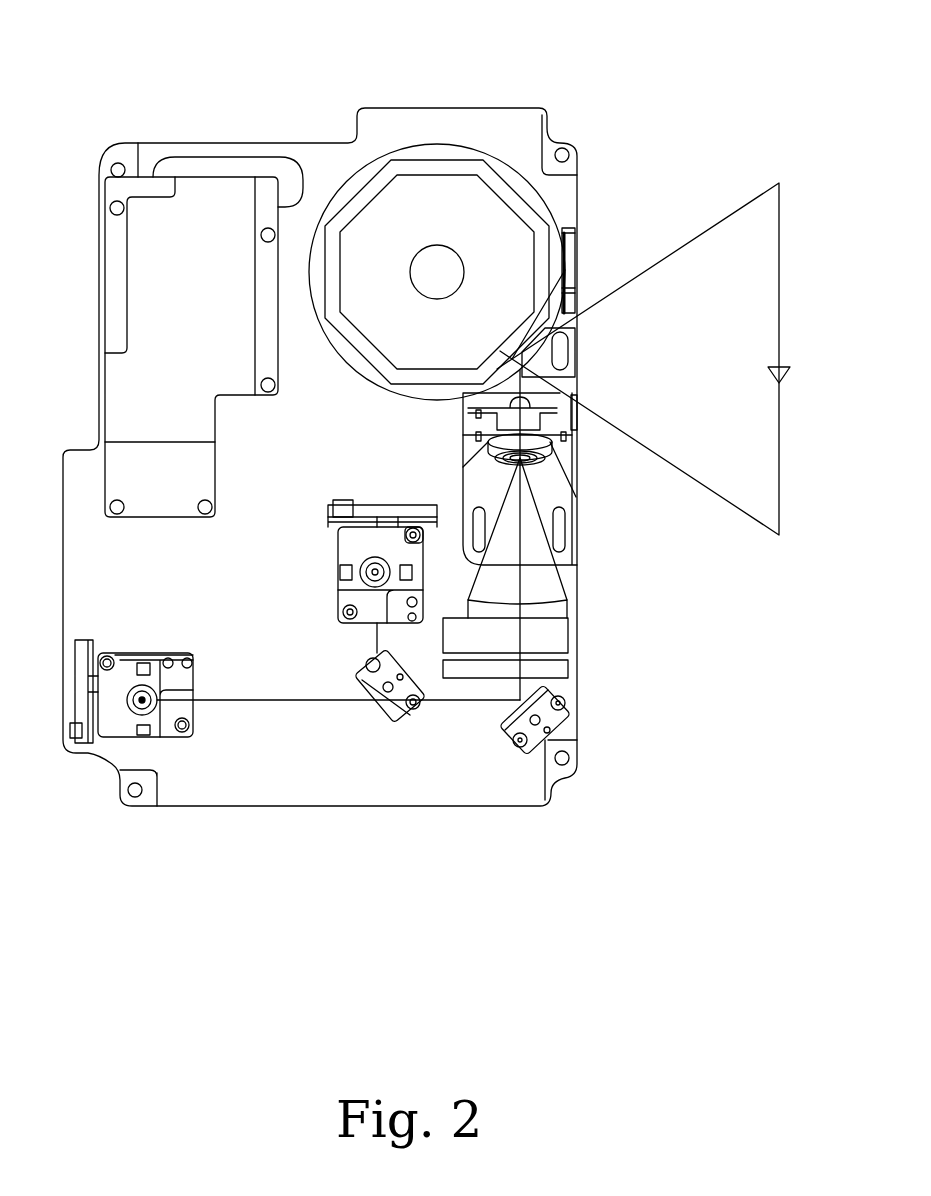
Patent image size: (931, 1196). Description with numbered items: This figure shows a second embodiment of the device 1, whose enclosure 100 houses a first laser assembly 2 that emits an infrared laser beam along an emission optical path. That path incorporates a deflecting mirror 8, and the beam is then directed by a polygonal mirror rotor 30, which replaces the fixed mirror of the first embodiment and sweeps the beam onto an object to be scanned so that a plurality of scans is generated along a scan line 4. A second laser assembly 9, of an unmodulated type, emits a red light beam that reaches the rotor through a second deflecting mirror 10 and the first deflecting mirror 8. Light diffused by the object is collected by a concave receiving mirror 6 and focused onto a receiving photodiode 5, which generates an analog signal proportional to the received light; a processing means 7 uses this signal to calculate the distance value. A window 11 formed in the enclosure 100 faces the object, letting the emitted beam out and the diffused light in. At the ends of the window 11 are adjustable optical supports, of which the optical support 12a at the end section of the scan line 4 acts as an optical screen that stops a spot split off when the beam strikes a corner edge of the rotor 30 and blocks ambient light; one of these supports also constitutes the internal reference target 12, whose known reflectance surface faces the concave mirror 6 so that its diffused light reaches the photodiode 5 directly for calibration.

The device 1 is at (447, 500).
The enclosure 100 is at (429, 108).
The first laser assembly 2 is at (155, 652).
The scan line 4 is at (779, 289).
The receiving photodiode 5 is at (572, 498).
The concave receiving mirror 6 is at (557, 635).
The processing means 7 is at (192, 281).
The deflecting mirror 8 is at (575, 722).
The second laser assembly 9 is at (343, 550).
The second deflecting mirror 10 is at (352, 690).
The window 11 is at (576, 365).
The reference target 12 is at (565, 272).
The optical support 12a is at (577, 428).
The polygonal mirror rotor 30 is at (388, 296).